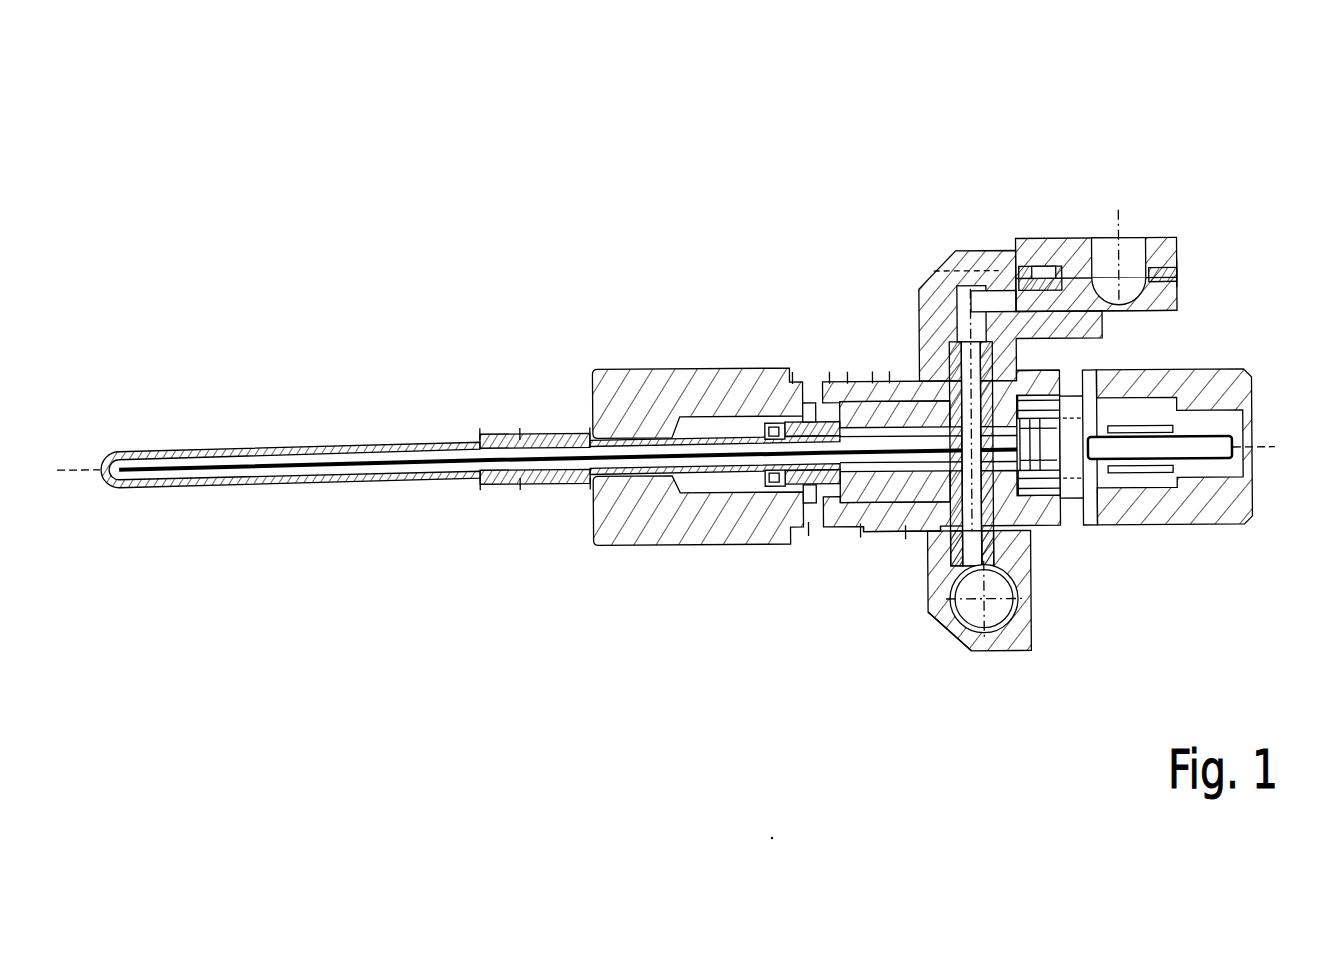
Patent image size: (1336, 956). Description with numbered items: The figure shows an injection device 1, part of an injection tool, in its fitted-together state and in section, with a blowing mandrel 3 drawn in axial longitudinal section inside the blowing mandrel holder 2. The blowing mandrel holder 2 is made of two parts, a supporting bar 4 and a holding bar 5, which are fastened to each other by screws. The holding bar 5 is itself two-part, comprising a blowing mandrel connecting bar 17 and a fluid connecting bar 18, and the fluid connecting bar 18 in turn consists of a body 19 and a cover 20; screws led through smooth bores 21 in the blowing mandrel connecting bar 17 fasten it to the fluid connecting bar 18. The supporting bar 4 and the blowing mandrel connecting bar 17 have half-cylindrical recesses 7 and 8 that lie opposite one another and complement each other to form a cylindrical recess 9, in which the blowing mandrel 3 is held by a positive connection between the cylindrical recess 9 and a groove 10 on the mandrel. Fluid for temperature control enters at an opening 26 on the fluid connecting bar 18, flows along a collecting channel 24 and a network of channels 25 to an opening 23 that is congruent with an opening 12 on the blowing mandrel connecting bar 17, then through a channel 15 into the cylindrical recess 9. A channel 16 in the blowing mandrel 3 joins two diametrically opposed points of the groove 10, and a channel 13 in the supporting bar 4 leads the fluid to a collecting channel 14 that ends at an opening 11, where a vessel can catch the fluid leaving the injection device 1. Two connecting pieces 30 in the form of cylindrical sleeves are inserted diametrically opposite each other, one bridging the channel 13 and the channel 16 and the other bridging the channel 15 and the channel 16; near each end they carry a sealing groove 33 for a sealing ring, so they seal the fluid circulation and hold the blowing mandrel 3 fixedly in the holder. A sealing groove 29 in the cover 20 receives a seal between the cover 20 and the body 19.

The injection device 1 is at (500, 181).
The blowing mandrel holder 2 is at (912, 208).
The blowing mandrel 3 is at (640, 544).
The supporting bar 4 is at (1033, 625).
The holding bar 5 is at (1012, 196).
The half-cylindrical recess 7 is at (906, 532).
The half-cylindrical recess 8 is at (920, 382).
The cylindrical recess 9 is at (1033, 556).
The groove 10 is at (1055, 522).
The opening 11 is at (943, 652).
The opening 12 is at (893, 395).
The channel 13 is at (928, 597).
The collecting channel 14 is at (965, 640).
The channel 15 is at (935, 330).
The channel 16 is at (883, 380).
The blowing mandrel connecting bar 17 is at (1027, 367).
The fluid connecting bar 18 is at (1203, 274).
The body 19 is at (1160, 314).
The cover 20 is at (1180, 250).
The smooth bore 21 is at (998, 274).
The opening 23 is at (1049, 242).
The collecting channel 24 is at (1080, 241).
The channel 25 is at (1062, 290).
The opening 26 is at (1178, 284).
The sealing groove 29 is at (1180, 284).
The connecting piece 30 is at (830, 527).
The sealing groove 33 is at (925, 583).